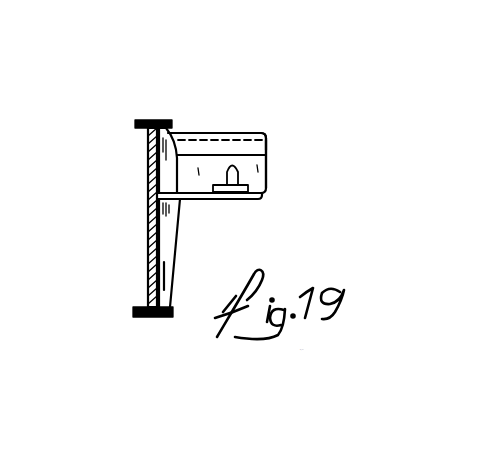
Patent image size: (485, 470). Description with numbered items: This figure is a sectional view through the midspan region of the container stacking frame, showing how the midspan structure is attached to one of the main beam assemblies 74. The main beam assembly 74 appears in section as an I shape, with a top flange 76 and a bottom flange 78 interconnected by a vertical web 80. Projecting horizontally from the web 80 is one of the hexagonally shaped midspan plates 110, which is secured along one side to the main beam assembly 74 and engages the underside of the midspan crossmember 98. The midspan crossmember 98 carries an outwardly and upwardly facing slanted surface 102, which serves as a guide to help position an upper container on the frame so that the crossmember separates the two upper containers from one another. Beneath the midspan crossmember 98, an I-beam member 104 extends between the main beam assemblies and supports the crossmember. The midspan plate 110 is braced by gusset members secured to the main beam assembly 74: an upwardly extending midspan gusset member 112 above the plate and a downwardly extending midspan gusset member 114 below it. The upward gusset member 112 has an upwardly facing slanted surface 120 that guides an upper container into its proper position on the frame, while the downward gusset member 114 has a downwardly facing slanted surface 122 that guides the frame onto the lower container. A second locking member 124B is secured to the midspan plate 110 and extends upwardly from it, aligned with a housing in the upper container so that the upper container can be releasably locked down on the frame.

The main beam assembly 74 is at (252, 64).
The top flange 76 is at (158, 117).
The bottom flange 78 is at (148, 318).
The web 80 is at (168, 253).
The midspan crossmember 98 is at (252, 134).
The slanted surface 102 is at (256, 136).
The I-beam member 104 is at (268, 153).
The midspan plate 110 is at (236, 198).
The upwardly extending midspan gusset member 112 is at (150, 163).
The downwardly extending midspan gusset member 114 is at (176, 227).
The upwardly facing slanted surface 120 is at (181, 147).
The downwardly facing slanted surface 122 is at (171, 262).
The second locking member 124B is at (270, 175).